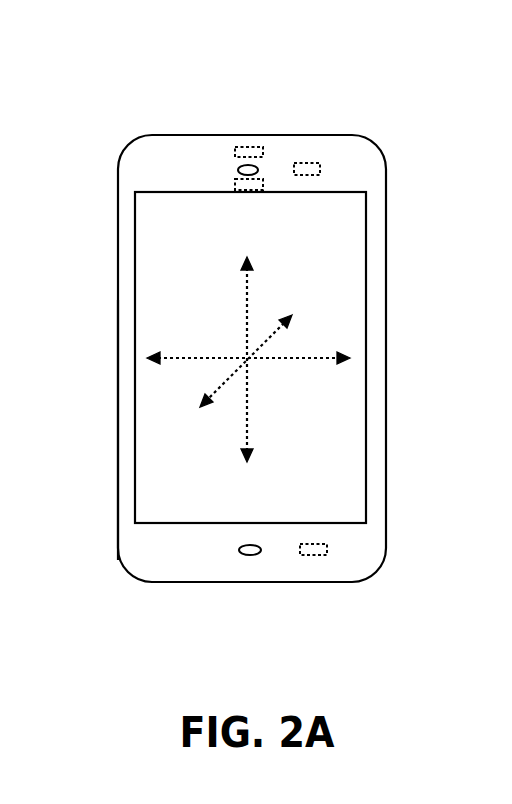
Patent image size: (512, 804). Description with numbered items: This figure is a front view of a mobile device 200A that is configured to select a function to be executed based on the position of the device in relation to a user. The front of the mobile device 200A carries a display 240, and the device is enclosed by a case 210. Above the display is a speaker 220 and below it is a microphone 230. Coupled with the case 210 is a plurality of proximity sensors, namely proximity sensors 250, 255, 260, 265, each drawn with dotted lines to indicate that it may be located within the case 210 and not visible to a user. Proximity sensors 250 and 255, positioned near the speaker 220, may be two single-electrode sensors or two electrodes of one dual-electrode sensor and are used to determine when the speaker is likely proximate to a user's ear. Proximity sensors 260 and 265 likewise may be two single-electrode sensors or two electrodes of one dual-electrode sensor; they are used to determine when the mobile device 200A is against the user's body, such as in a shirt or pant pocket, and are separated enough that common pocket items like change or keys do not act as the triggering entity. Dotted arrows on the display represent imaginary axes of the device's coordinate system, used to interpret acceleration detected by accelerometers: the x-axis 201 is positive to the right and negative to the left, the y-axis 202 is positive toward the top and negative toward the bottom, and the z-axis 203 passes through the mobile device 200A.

The mobile device 200A is at (91, 97).
The x-axis 201 is at (200, 358).
The y-axis 202 is at (247, 280).
The z-axis 203 is at (279, 329).
The case 210 is at (118, 445).
The speaker 220 is at (238, 170).
The microphone 230 is at (239, 550).
The display 240 is at (135, 485).
The proximity sensor 250 is at (245, 147).
The proximity sensor 255 is at (263, 184).
The proximity sensor 260 is at (308, 163).
The proximity sensor 265 is at (300, 552).